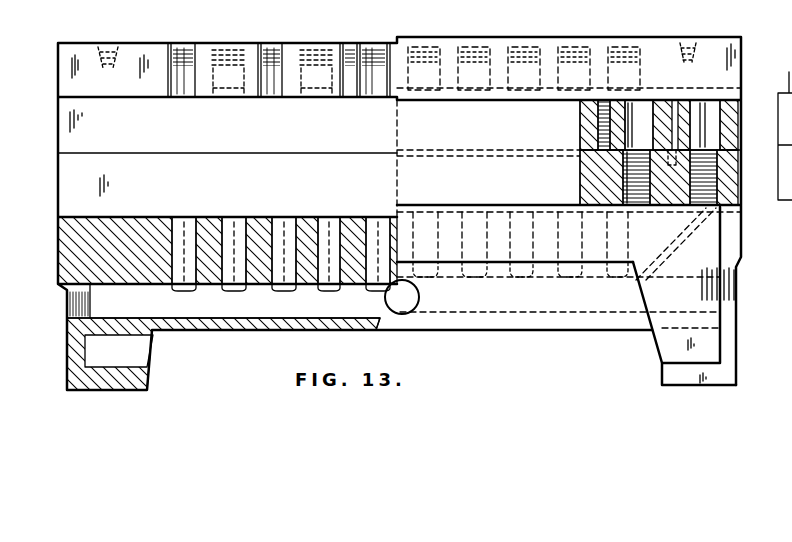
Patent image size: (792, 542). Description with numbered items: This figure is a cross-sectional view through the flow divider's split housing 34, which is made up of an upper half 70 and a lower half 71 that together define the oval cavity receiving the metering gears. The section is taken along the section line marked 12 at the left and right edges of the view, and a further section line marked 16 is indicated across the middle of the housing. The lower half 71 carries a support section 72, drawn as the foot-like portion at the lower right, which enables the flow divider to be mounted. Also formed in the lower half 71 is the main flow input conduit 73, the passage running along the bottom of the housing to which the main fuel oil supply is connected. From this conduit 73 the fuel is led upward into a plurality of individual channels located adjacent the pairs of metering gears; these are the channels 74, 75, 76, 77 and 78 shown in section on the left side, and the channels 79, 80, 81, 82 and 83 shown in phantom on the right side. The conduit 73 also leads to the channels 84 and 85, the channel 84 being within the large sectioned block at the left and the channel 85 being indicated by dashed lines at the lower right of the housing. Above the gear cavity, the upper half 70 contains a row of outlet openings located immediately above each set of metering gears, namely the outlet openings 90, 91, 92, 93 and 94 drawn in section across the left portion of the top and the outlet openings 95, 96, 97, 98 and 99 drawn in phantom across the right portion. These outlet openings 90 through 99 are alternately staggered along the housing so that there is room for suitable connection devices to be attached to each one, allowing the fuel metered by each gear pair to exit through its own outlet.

The housing section line 12 is at (58, 153).
The section line 16 is at (503, 170).
The split housing 34 is at (531, 337).
The upper half 70 is at (655, 48).
The lower half 71 is at (705, 250).
The support section 72 is at (680, 375).
The main flow input conduit 73 is at (221, 318).
The channel 74 is at (183, 289).
The channel 75 is at (236, 290).
The channel 76 is at (287, 290).
The channel 77 is at (335, 290).
The channel 78 is at (377, 220).
The channel 79 is at (432, 280).
The channel 80 is at (483, 280).
The channel 81 is at (524, 280).
The channel 82 is at (570, 280).
The channel 83 is at (615, 280).
The channel 84 is at (132, 230).
The channel 85 is at (680, 233).
The outlet opening 90 is at (197, 88).
The outlet opening 91 is at (242, 85).
The outlet opening 92 is at (285, 88).
The outlet opening 93 is at (315, 85).
The outlet opening 94 is at (367, 83).
The outlet opening 95 is at (412, 82).
The outlet opening 96 is at (462, 82).
The outlet opening 97 is at (520, 83).
The outlet opening 98 is at (566, 47).
The outlet opening 99 is at (613, 47).